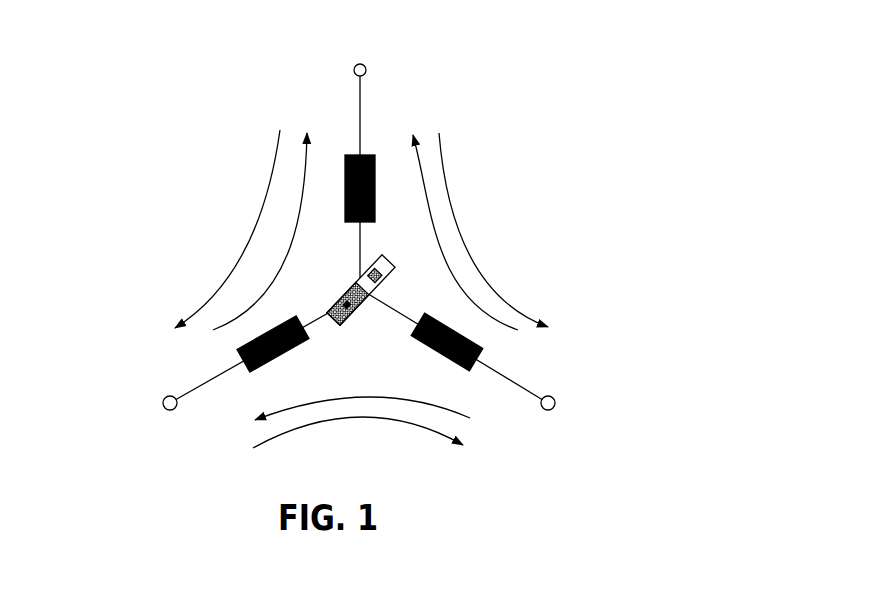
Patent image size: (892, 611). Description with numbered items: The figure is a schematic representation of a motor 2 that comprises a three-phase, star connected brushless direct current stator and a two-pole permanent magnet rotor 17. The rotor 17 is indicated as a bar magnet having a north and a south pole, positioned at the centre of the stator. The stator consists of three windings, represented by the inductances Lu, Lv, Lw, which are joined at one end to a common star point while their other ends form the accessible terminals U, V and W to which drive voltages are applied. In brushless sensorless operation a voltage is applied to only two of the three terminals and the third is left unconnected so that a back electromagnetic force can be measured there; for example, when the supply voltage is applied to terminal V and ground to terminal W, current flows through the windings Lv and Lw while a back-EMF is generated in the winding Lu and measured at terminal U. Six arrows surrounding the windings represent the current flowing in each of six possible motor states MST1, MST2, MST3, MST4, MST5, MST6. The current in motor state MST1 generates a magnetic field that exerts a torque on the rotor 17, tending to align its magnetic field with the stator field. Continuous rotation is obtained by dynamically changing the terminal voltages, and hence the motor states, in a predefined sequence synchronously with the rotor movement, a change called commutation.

The motor 2 is at (351, 231).
The rotor 17 is at (367, 293).
The inductance Lu is at (343, 188).
The inductance Lv is at (447, 334).
The inductance Lw is at (273, 335).
The motor state MST1 is at (362, 389).
The motor state MST2 is at (454, 232).
The motor state MST3 is at (270, 231).
The motor state MST4 is at (358, 432).
The motor state MST5 is at (493, 230).
The motor state MST6 is at (227, 229).